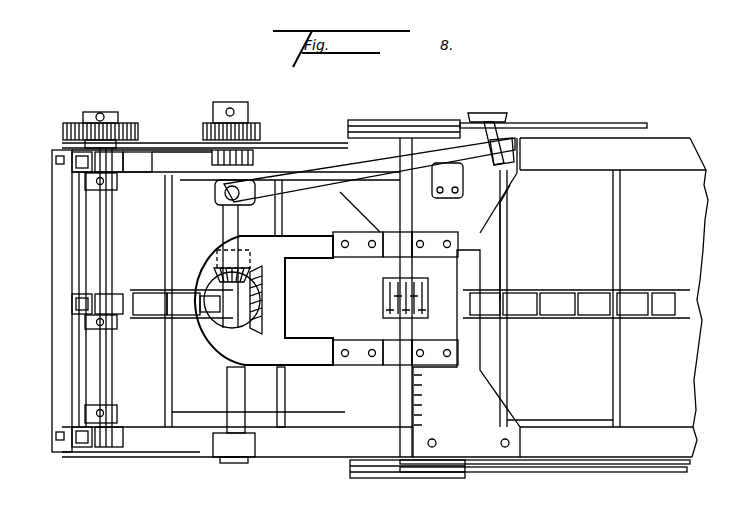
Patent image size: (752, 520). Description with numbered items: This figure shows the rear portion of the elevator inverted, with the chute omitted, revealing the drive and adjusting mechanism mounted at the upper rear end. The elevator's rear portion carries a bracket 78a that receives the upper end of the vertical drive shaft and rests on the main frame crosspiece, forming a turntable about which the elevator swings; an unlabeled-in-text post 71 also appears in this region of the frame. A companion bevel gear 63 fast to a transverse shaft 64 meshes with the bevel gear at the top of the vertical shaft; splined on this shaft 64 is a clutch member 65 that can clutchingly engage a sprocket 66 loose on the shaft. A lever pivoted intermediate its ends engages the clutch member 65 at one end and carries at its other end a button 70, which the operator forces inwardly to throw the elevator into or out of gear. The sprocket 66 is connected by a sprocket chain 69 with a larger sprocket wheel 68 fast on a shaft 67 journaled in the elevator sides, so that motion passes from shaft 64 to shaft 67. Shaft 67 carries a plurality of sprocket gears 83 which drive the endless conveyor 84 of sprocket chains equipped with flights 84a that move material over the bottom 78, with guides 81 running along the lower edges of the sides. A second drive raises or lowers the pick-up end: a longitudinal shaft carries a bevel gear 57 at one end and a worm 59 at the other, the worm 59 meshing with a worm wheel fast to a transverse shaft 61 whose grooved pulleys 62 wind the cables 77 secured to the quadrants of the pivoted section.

The bevel gear 57 is at (263, 283).
The worm 59 is at (384, 308).
The transverse shaft 61 is at (415, 412).
The grooved pulleys 62 is at (380, 122).
The bevel gear 63 is at (218, 272).
The transverse shaft 64 is at (228, 400).
The clutch member 65 is at (216, 196).
The sprocket 66 is at (205, 128).
The shaft 67 is at (113, 391).
The sprocket wheel 68 is at (64, 123).
The sprocket chain 69 is at (314, 162).
The button 70 is at (505, 118).
The post 71 is at (263, 370).
The cables 77 is at (633, 126).
The bottom 78 is at (604, 282).
The bracket 78a is at (233, 352).
The guides 81 is at (568, 142).
The sprocket gears 83 is at (73, 165).
The endless conveyor 84 is at (588, 290).
The flights 84a is at (283, 412).